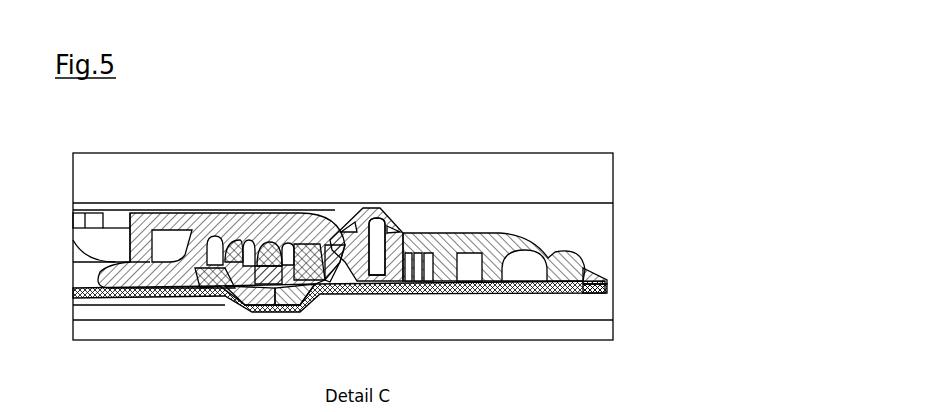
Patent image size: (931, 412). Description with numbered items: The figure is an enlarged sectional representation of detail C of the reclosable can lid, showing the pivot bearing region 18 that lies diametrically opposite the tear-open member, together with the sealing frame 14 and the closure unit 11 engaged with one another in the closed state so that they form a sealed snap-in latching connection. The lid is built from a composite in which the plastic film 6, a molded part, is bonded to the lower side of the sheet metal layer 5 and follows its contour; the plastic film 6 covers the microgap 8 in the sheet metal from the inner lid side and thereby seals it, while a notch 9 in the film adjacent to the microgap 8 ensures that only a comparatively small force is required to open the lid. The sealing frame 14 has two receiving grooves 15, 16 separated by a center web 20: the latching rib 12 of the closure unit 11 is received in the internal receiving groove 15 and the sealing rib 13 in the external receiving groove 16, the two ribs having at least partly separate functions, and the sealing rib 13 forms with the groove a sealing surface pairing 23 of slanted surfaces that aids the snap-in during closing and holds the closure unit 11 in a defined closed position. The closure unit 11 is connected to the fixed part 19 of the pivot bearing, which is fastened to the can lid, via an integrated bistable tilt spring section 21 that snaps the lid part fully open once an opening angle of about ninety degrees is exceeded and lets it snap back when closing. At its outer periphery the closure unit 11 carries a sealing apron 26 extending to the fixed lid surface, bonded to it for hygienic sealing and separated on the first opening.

The sheet metal layer 5 is at (588, 276).
The plastic film 6 is at (592, 283).
The microgap 8 is at (202, 292).
The notch 9 is at (185, 290).
The closure unit 11 is at (217, 213).
The latching rib 12 is at (298, 240).
The sealing rib 13 is at (248, 250).
The sealing frame 14 is at (337, 240).
The internal receiving groove 15 is at (270, 308).
The external receiving groove 16 is at (307, 308).
The pivot bearing region 18 is at (392, 201).
The fixed part of the pivot bearing 19 is at (460, 236).
The center web 20 is at (270, 232).
The tilt spring section 21 is at (377, 209).
The sealing surface pairing 23 is at (237, 228).
The sealing apron 26 is at (592, 291).